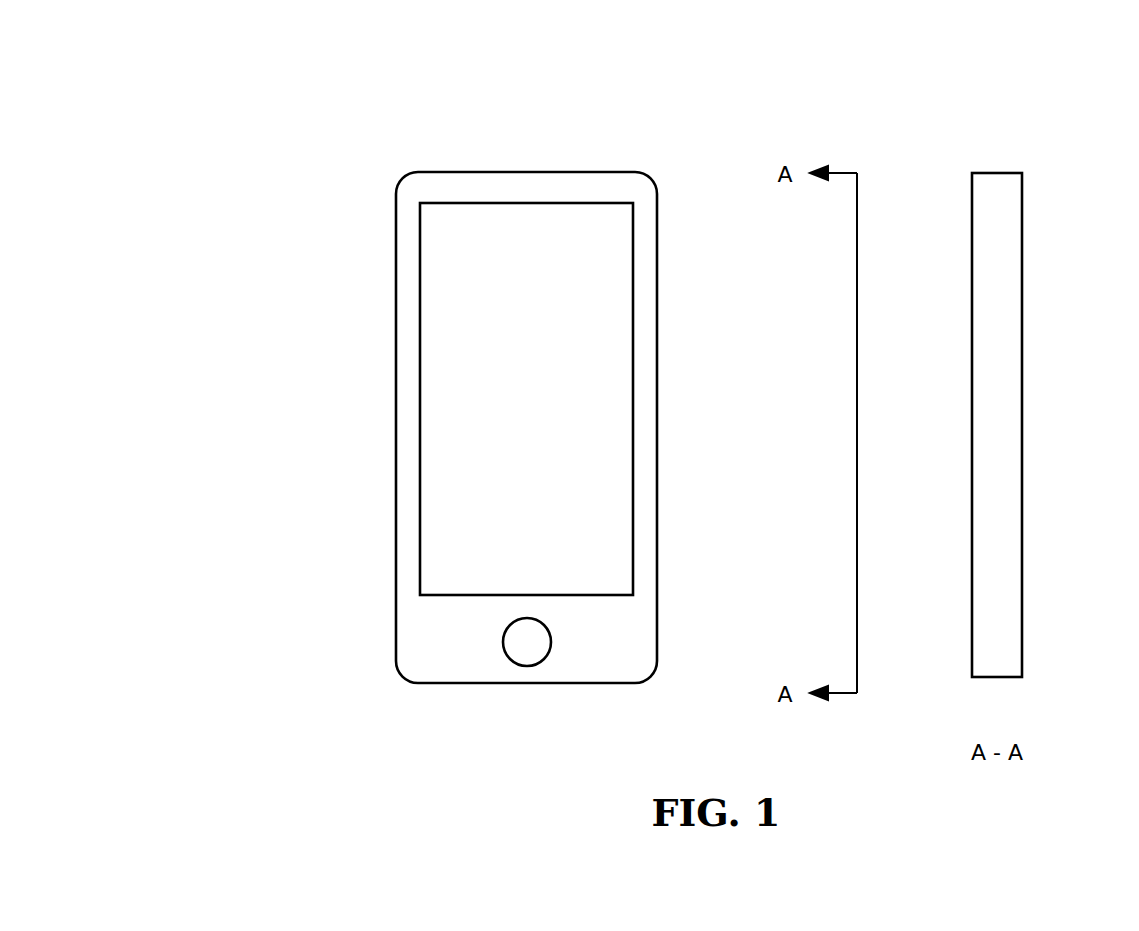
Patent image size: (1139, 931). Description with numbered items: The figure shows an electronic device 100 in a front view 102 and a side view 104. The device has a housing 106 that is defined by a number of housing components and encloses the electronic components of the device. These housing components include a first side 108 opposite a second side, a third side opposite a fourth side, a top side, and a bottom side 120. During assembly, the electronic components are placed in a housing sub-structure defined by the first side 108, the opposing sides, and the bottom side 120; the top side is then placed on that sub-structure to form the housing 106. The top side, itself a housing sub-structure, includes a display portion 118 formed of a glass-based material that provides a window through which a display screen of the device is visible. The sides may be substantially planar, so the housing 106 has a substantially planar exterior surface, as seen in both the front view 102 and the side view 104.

The electronic device 100 is at (218, 92).
The front view 102 is at (501, 108).
The side view 104 is at (980, 108).
The housing 106 is at (396, 180).
The first side 108 is at (397, 425).
The display portion 118 is at (633, 323).
The bottom side 120 is at (1022, 378).